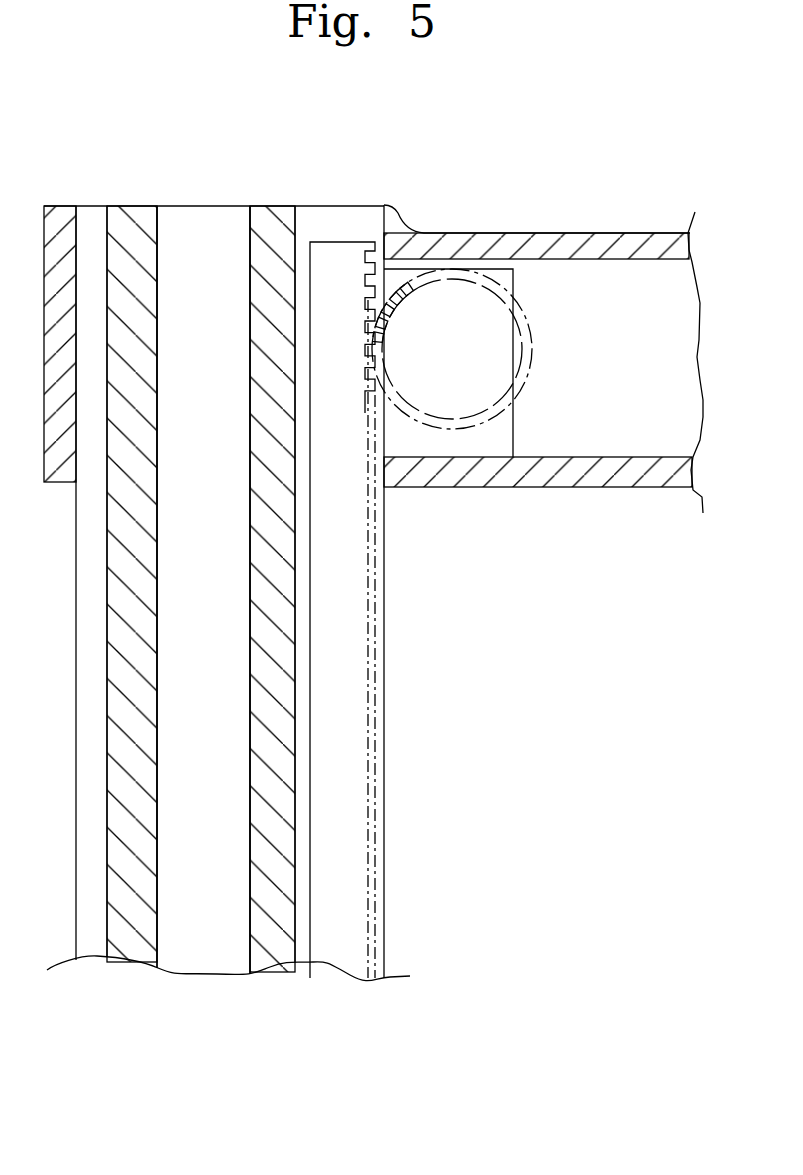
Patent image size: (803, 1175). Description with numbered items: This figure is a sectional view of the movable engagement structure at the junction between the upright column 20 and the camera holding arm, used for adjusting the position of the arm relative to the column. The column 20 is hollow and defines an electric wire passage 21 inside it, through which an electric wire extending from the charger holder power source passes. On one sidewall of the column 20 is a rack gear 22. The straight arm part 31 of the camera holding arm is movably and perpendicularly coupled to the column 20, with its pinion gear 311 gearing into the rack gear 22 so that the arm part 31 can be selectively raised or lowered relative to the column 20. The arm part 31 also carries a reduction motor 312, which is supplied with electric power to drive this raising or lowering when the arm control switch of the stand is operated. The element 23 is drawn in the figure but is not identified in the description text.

The upright column 20 is at (133, 230).
The electric wire passage 21 is at (208, 228).
The rack gear 22 is at (333, 262).
The cable 23 is at (352, 644).
The straight arm part 31 is at (565, 248).
The pinion gear 311 is at (455, 268).
The reduction motor 312 is at (455, 442).